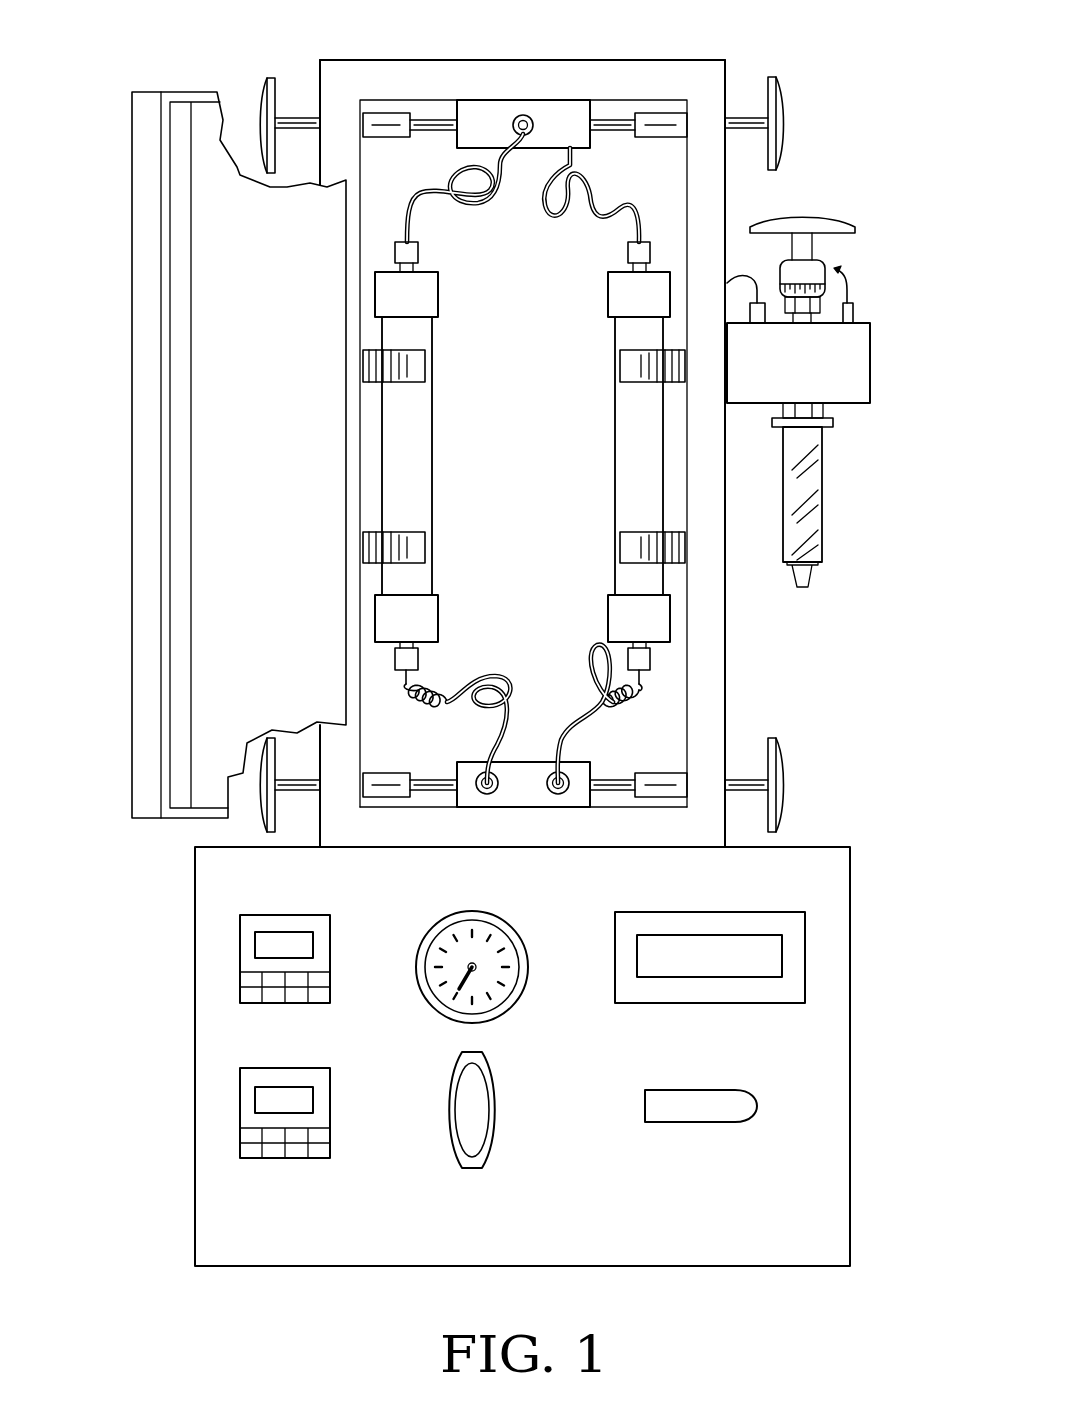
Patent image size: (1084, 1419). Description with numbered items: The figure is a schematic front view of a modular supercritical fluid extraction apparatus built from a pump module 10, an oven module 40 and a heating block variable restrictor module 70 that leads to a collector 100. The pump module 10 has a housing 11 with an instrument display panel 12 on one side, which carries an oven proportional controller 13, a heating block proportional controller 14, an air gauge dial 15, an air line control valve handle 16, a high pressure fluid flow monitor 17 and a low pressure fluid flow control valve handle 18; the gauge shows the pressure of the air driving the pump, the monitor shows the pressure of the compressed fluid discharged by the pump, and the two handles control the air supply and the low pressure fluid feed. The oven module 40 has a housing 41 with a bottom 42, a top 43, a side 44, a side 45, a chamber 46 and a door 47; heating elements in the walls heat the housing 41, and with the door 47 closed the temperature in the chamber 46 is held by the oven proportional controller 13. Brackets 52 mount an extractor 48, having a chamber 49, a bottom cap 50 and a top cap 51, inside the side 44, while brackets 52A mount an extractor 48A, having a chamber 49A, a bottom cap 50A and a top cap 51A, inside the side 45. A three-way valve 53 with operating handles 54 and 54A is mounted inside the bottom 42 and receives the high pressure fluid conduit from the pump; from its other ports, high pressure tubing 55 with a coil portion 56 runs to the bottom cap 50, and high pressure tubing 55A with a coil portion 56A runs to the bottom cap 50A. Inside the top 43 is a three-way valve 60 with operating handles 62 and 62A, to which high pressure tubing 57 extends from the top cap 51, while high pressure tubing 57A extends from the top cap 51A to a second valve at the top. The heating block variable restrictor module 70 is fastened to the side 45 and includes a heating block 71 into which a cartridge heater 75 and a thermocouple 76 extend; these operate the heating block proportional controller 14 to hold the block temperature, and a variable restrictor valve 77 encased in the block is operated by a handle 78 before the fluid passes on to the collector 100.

The pump module 10 is at (509, 633).
The housing 11 is at (851, 900).
The instrument display panel 12 is at (232, 1205).
The oven proportional controller 13 is at (247, 938).
The heating block proportional controller 14 is at (247, 1100).
The air gauge dial 15 is at (447, 923).
The air line control valve handle 16 is at (463, 1080).
The high pressure fluid flow monitor 17 is at (697, 950).
The low pressure fluid flow control valve handle 18 is at (695, 1100).
The oven module 40 is at (572, 14).
The housing 41 is at (519, 422).
The bottom 42 is at (530, 833).
The top 43 is at (633, 58).
The side 44 is at (319, 69).
The side 45 is at (728, 72).
The chamber 46 is at (658, 685).
The door 47 is at (134, 447).
The extractor 48 is at (430, 456).
The extractor 48A is at (607, 456).
The chamber 49 is at (417, 487).
The chamber 49A is at (628, 437).
The bottom cap 50 is at (425, 617).
The bottom cap 50A is at (617, 612).
The top cap 51 is at (428, 292).
The top cap 51A is at (613, 290).
The brackets 52 is at (418, 367).
The brackets 52A is at (628, 363).
The three-way valve 53 is at (468, 770).
The operating handle 54 is at (783, 770).
The operating handle 54A is at (258, 764).
The high pressure tubing 55 is at (520, 690).
The high pressure tubing 55A is at (557, 732).
The coil portion 56 is at (437, 694).
The coil portion 56A is at (634, 693).
The high pressure tubing 57 is at (408, 215).
The high pressure tubing 57A is at (590, 220).
The three-way valve 60 is at (478, 112).
The operating handle 62 is at (786, 107).
The operating handle 62A is at (262, 97).
The heating block variable restrictor module 70 is at (946, 375).
The heating block 71 is at (855, 398).
The cartridge heater 75 is at (767, 312).
The thermocouple 76 is at (855, 310).
The variable restrictor valve 77 is at (853, 267).
The handle 78 is at (800, 217).
The collector 100 is at (823, 505).